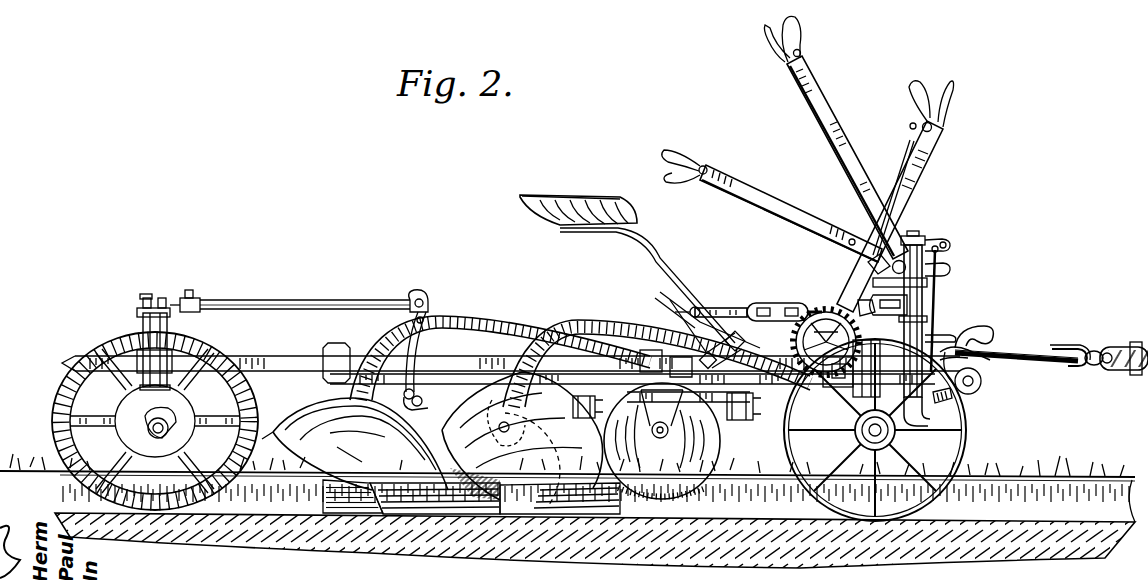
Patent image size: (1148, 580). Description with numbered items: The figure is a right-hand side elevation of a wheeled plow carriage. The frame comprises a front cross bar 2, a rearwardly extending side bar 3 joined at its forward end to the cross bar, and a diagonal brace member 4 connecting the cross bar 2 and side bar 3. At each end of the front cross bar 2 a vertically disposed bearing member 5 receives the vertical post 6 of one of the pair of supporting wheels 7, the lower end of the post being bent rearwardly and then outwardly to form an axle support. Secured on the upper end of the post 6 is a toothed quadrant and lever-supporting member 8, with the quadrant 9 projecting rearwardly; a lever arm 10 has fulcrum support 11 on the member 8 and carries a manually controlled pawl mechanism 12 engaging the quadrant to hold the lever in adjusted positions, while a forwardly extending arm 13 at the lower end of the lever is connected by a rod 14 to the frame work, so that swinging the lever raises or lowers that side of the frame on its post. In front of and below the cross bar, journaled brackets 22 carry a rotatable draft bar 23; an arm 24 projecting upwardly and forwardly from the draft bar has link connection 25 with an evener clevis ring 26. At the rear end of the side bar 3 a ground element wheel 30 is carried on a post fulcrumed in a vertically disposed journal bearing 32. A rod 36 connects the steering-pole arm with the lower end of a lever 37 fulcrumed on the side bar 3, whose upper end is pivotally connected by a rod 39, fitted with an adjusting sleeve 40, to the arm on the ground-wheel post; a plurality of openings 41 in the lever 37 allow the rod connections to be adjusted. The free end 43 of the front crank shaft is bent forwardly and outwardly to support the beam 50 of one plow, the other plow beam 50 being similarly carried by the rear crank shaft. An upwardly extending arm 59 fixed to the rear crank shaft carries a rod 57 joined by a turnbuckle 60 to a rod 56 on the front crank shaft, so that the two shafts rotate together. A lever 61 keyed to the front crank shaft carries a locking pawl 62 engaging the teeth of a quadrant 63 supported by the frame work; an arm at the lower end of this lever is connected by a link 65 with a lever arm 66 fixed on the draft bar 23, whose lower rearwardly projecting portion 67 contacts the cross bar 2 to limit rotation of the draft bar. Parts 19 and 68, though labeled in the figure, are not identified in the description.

The front cross bar 2 is at (1002, 337).
The side bar 3 is at (297, 362).
The diagonal brace member 4 is at (780, 385).
The bearing member 5 is at (937, 332).
The vertical post 6 is at (921, 238).
The supporting wheel 7 is at (925, 438).
The toothed quadrant and lever-supporting member 8 is at (952, 270).
The quadrant 9 is at (868, 262).
The lever arm 10 is at (852, 152).
The fulcrum support 11 is at (892, 270).
The pawl mechanism 12 is at (718, 197).
The forwardly extending arm 13 is at (952, 267).
The rod 14 is at (940, 290).
The block 19 is at (873, 298).
The journaled bracket 22 is at (979, 386).
The draft bar 23 is at (1000, 360).
The arm 24 is at (1015, 312).
The link connection 25 is at (1050, 366).
The evener clevis ring 26 is at (1090, 368).
The ground element wheel 30 is at (108, 360).
The journal bearing 32 is at (148, 335).
The rod 36 is at (421, 404).
The lever 37 is at (427, 307).
The rod 39 is at (186, 298).
The adjusting sleeve 40 is at (293, 303).
The openings 41 is at (414, 313).
The free end of crank shaft 43 is at (858, 396).
The plow beam 50 is at (510, 323).
The rod 56 is at (846, 320).
The rod 57 is at (715, 308).
The upwardly extending arm 59 is at (685, 318).
The turnbuckle 60 is at (767, 304).
The lever 61 is at (903, 196).
The locking pawl 62 is at (897, 240).
The quadrant 63 is at (720, 334).
The link 65 is at (957, 338).
The lever arm 66 is at (970, 362).
The lower rearwardly projecting portion 67 is at (937, 403).
The seat 68 is at (600, 205).